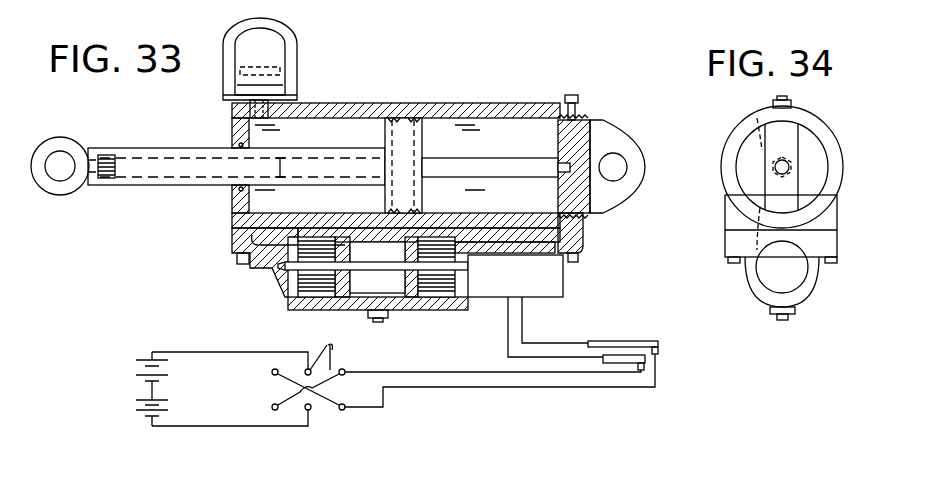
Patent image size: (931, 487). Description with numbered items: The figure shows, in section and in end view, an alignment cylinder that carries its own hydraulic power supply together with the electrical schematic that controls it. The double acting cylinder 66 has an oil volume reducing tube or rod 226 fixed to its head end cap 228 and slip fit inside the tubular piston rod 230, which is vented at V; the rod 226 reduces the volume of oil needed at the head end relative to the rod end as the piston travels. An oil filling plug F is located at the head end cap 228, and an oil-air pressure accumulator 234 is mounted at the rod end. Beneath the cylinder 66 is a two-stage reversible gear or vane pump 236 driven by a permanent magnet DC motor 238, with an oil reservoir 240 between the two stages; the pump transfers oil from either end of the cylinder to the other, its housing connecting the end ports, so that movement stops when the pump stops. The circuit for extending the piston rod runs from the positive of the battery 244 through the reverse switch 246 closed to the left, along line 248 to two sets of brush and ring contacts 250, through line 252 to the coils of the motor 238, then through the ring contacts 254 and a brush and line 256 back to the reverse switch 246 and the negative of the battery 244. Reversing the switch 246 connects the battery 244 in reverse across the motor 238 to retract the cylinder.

In FIG. 33, the double acting cylinder 66 is at (495, 106).
In FIG. 34, the double acting cylinder 66 is at (815, 120).
In FIG. 33, the oil volume reducing tube or rod 226 is at (456, 180).
In FIG. 34, the oil volume reducing tube or rod 226 is at (756, 116).
In FIG. 33, the head end cap 228 is at (611, 126).
In FIG. 33, the tubular piston rod 230 is at (188, 148).
In FIG. 33, the oil-air pressure accumulator 234 is at (300, 64).
In FIG. 33, the two-stage reversible gear or vane pump 236 is at (300, 290).
In FIG. 34, the two-stage reversible gear or vane pump 236 is at (762, 300).
In FIG. 33, the permanent magnet DC motor 238 is at (565, 283).
In FIG. 33, the oil reservoir 240 is at (365, 285).
In FIG. 33, the battery 244 is at (133, 372).
In FIG. 33, the reverse switch 246 is at (318, 412).
In FIG. 33, the line 248 is at (470, 372).
In FIG. 33, the brush and ring contacts 250 is at (643, 362).
In FIG. 33, the line 252 is at (508, 334).
In FIG. 33, the ring contacts 254 is at (596, 340).
In FIG. 33, the line 256 is at (525, 392).
In FIG. 33, the oil filling plug F is at (579, 100).
In FIG. 34, the oil filling plug F is at (792, 103).
In FIG. 33, the vent V is at (92, 188).